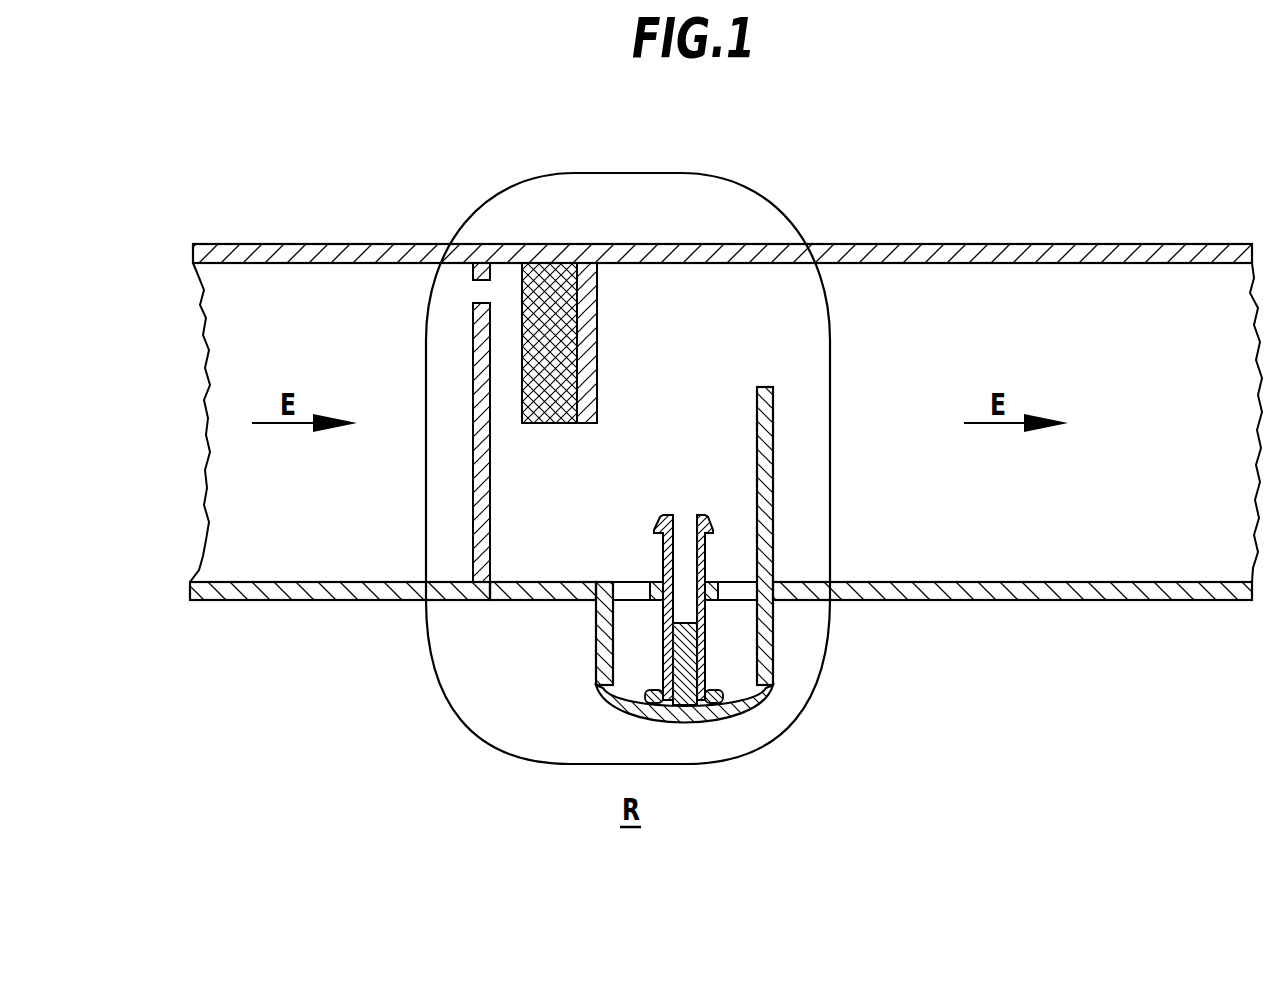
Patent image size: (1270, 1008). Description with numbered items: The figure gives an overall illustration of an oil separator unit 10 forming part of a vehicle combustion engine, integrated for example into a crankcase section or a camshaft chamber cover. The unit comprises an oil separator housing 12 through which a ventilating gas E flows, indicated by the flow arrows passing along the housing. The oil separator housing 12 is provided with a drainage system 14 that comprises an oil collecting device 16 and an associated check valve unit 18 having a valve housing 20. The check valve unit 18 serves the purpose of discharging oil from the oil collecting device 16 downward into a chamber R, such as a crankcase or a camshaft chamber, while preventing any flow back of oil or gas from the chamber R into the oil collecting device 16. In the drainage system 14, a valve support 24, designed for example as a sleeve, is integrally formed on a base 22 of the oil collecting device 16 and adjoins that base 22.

The oil separator unit 10 is at (514, 172).
The oil separator housing 12 is at (893, 246).
The drainage system 14 is at (580, 657).
The oil collecting device 16 is at (552, 566).
The check valve unit 18 is at (748, 725).
The valve housing 20 is at (793, 620).
The base 22 is at (987, 595).
The valve support 24 is at (765, 653).